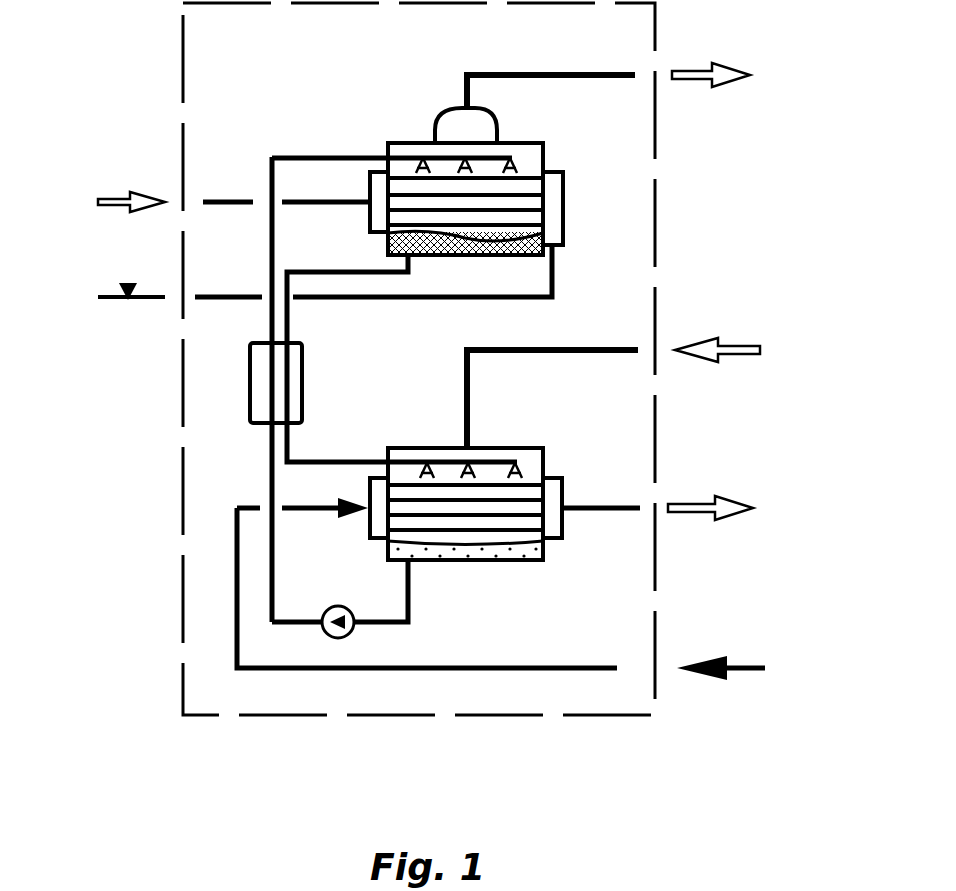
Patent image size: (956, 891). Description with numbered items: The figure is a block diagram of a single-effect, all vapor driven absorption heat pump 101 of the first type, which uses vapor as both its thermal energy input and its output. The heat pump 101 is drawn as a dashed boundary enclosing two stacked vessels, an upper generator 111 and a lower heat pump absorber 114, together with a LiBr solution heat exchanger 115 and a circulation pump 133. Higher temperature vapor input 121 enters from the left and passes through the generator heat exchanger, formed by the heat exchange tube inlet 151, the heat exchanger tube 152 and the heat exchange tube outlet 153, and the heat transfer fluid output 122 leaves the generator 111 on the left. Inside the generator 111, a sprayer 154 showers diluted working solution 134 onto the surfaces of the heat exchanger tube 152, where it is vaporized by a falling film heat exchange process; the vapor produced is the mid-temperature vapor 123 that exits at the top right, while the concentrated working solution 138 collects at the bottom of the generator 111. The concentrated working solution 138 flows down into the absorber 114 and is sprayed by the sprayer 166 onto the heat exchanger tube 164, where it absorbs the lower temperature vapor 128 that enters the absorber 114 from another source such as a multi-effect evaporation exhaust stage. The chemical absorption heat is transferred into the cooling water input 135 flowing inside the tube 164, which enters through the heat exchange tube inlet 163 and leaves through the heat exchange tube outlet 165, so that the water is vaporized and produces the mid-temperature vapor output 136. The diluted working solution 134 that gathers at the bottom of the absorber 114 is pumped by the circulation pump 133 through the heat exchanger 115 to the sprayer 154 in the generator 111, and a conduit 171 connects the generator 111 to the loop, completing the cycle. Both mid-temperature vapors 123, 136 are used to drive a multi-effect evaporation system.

The heat pump 101 is at (182, 140).
The generator 111 is at (433, 140).
The heat pump absorber 114 is at (543, 450).
The LiBr solution heat exchanger 115 is at (250, 373).
The higher temperature vapor input 121 is at (137, 197).
The heat transfer fluid output 122 is at (128, 285).
The mid-temperature vapor 123 is at (712, 66).
The lower temperature vapor 128 is at (702, 349).
The circulation pump 133 is at (338, 638).
The diluted working solution 134 is at (493, 558).
The cooling water input 135 is at (705, 662).
The mid-temperature vapor output 136 is at (702, 506).
The concentrated working solution 138 is at (490, 237).
The heat exchange tube inlet 151 is at (370, 182).
The heat exchanger tube 152 is at (413, 197).
The sprayer 154 is at (422, 163).
The heat exchange tube outlet 153 is at (563, 178).
The heat exchange tube inlet 163 is at (290, 312).
The heat exchanger tube 164 is at (393, 557).
The heat exchange tube outlet 165 is at (372, 492).
The sprayer 166 is at (445, 465).
The supply conduit 171 is at (268, 215).